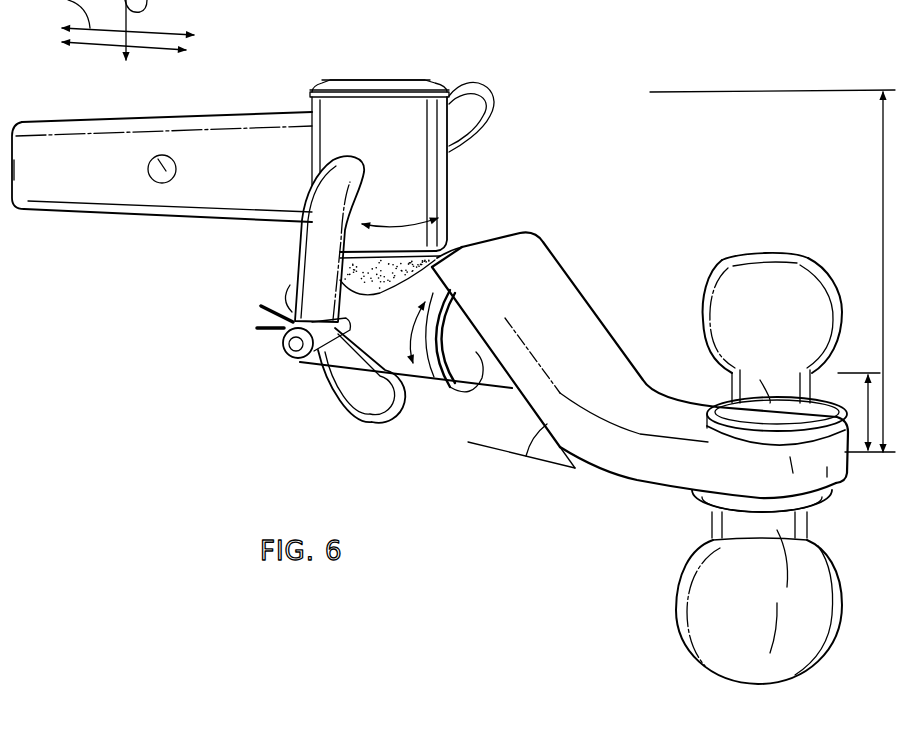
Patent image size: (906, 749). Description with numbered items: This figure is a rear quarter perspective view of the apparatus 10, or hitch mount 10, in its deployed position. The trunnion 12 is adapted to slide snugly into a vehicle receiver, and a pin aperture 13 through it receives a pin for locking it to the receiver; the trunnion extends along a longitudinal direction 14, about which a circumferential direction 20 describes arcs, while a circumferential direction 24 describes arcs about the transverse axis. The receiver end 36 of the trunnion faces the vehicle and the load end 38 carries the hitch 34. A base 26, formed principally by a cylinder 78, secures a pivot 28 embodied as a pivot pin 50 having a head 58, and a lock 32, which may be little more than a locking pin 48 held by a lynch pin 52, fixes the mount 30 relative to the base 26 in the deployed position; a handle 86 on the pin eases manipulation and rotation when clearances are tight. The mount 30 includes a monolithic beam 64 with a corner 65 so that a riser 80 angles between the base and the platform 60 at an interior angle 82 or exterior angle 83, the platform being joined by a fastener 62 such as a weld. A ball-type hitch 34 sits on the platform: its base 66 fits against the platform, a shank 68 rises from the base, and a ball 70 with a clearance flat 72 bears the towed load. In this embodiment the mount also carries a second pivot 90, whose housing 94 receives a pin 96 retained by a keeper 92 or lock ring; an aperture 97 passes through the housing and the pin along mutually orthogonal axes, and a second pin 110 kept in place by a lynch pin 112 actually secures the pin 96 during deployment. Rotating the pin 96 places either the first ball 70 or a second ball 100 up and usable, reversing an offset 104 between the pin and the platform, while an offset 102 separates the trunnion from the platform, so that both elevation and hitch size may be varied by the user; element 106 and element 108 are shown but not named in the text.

The hitch mount apparatus 10 is at (544, 165).
The trunnion 12 is at (82, 143).
The pin aperture 13 is at (160, 157).
The longitudinal direction 14 is at (170, 33).
The circumferential direction 20 is at (394, 388).
The circumferential direction 24 is at (438, 218).
The base 26 is at (462, 156).
The pivot 28 is at (345, 76).
The mount 30 is at (617, 248).
The lock 32 is at (295, 229).
The hitch 34 is at (703, 296).
The receiver end 36 is at (38, 125).
The load end 38 is at (283, 118).
The locking pin 48 is at (311, 239).
The pivot pin 50 is at (365, 273).
The lynch pin 52 is at (493, 99).
The head 58 is at (395, 79).
The platform 60 is at (652, 463).
The fastener 62 is at (450, 244).
The beam 64 is at (592, 298).
The corner 65 is at (607, 348).
The base 66 is at (812, 437).
The shank 68 is at (780, 388).
The ball 70 is at (808, 285).
The flat 72 is at (771, 254).
The cylinder 78 is at (379, 177).
The riser 80 is at (535, 255).
The interior angle 82 is at (566, 455).
The exterior angle 83 is at (525, 435).
The handle 86 is at (306, 270).
The second pivot 90 is at (230, 338).
The keeper 92 is at (318, 92).
The housing 94 is at (430, 395).
The pin 96 is at (458, 392).
The aperture 97 is at (316, 362).
The second ball 100 is at (672, 587).
The offset 102 is at (881, 150).
The offset 104 is at (866, 398).
The bar bend line 106 is at (686, 396).
The bar end 108 is at (840, 489).
The second pin 110 is at (288, 360).
The lynch pin 112 is at (337, 398).